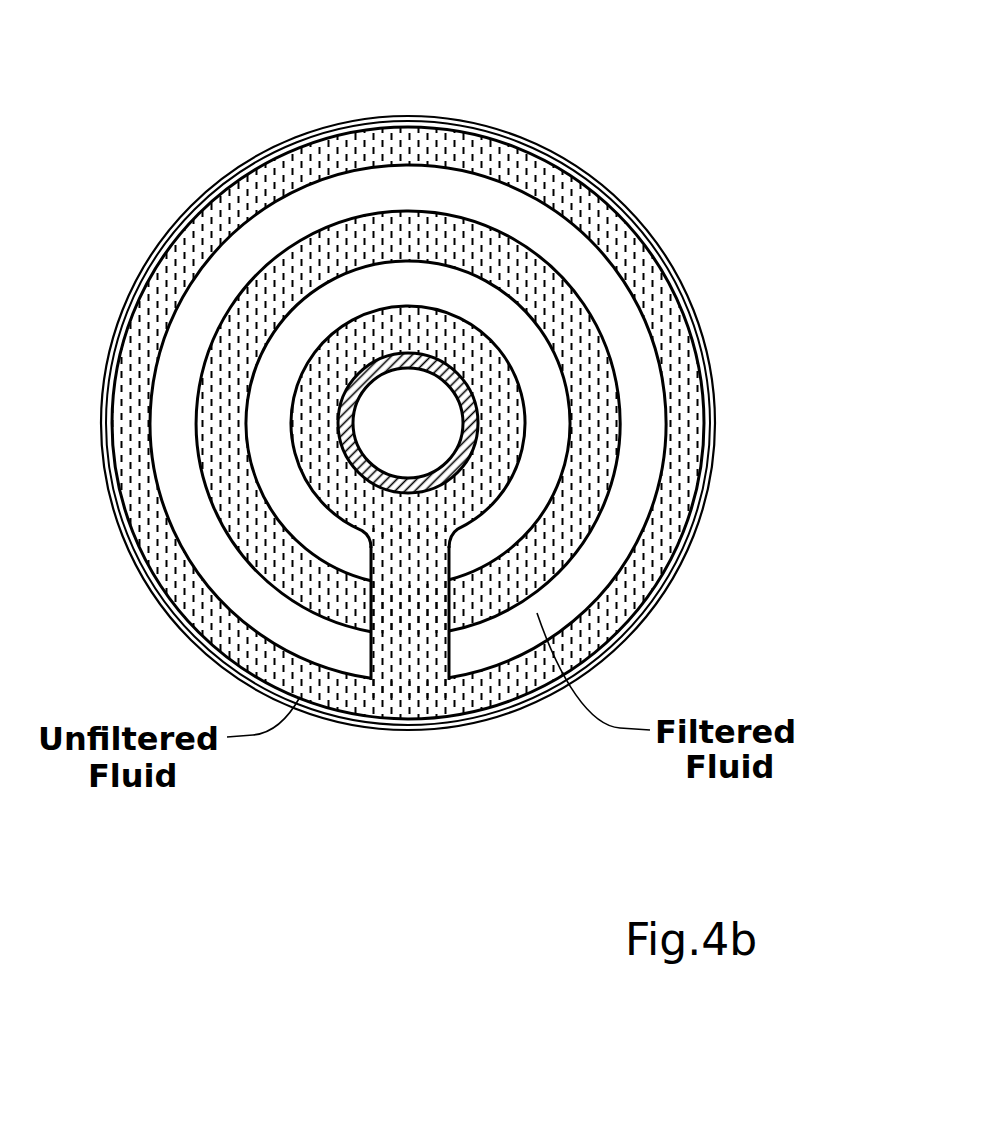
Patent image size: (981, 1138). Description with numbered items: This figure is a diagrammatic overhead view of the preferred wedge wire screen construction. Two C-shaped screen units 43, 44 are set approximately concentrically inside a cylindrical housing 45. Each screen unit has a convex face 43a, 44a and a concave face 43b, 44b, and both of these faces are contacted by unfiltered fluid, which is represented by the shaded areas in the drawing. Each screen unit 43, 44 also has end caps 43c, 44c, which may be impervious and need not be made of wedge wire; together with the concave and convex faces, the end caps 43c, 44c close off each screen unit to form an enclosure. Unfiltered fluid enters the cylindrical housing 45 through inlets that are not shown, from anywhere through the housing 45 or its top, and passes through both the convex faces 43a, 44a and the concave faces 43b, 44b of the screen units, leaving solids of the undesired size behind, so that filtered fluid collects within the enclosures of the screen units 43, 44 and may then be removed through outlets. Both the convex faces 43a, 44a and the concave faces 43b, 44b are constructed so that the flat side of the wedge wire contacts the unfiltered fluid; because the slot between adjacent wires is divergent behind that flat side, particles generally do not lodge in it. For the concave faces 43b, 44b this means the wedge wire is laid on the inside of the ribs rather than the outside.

The screen unit 43 is at (693, 424).
The convex face 43a is at (610, 255).
The concave face 43b is at (583, 300).
The end cap 43c is at (449, 650).
The screen unit 44 is at (265, 517).
The convex face 44a is at (280, 317).
The concave face 44b is at (300, 365).
The end cap 44c is at (372, 557).
The cylindrical housing 45 is at (552, 150).